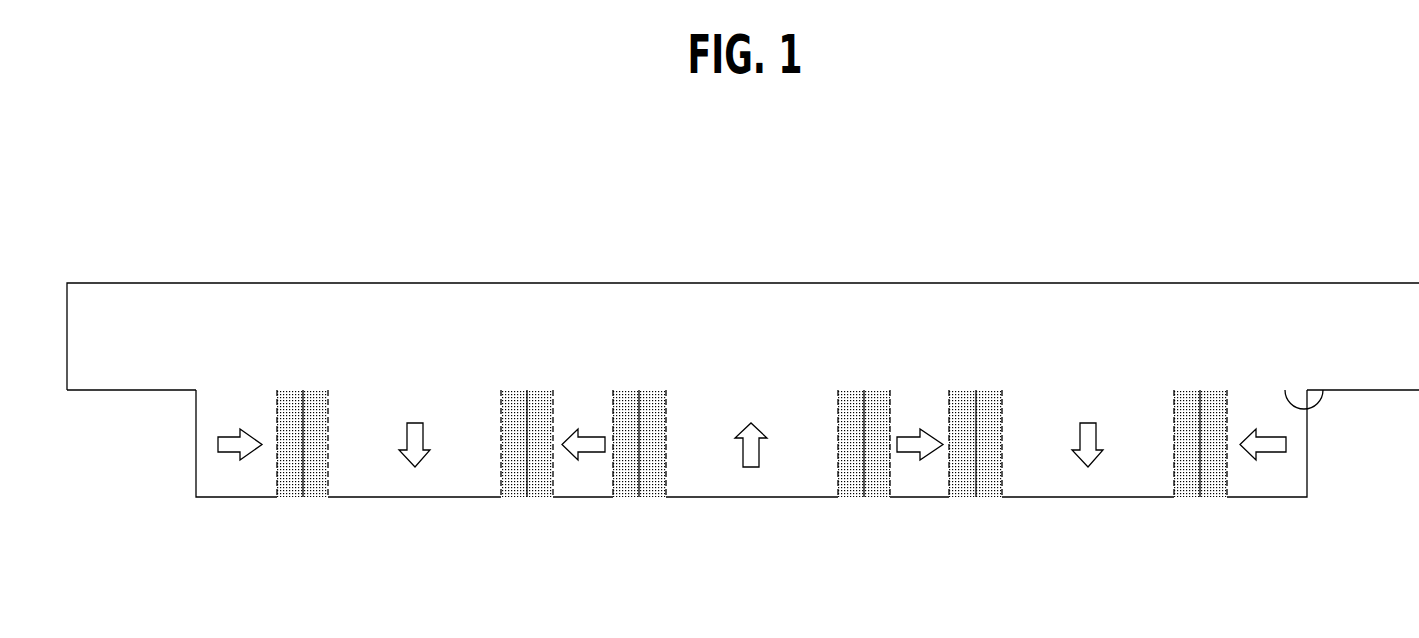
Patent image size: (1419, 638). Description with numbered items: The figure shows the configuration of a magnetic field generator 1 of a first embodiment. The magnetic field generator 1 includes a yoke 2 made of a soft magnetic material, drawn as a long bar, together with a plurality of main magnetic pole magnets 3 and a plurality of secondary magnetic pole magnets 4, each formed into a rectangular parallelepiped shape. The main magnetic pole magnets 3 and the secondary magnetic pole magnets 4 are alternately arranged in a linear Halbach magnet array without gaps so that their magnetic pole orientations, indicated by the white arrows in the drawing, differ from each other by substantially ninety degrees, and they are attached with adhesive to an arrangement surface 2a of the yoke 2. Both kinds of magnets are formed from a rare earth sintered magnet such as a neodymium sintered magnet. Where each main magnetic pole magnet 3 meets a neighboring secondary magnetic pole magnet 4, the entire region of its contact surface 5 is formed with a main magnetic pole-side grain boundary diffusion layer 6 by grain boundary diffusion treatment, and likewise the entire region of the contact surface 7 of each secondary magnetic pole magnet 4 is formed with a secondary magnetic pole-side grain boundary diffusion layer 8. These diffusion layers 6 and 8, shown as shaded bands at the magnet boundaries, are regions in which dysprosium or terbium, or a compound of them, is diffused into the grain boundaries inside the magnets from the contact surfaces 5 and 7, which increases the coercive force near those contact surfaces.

The magnetic field generator 1 is at (1100, 268).
The yoke 2 is at (757, 325).
The arrangement surface 2a is at (1320, 390).
The main magnetic pole magnet 3 is at (420, 480).
The secondary magnetic pole magnet 4 is at (223, 480).
The contact surface 5 is at (303, 468).
The main magnetic pole-side grain boundary diffusion layer 6 is at (322, 400).
The contact surface 7 is at (303, 443).
The secondary magnetic pole-side grain boundary diffusion layer 8 is at (292, 400).